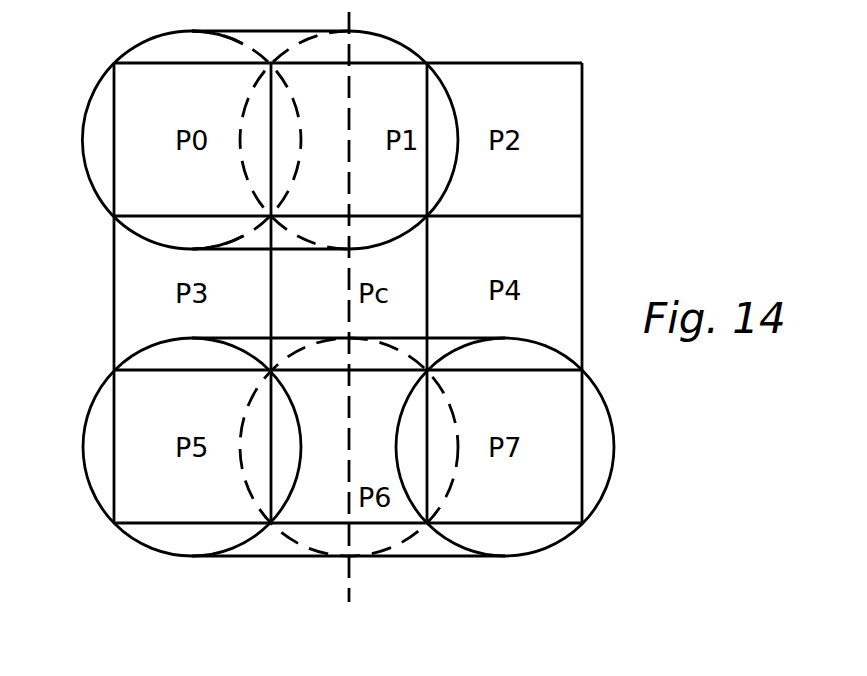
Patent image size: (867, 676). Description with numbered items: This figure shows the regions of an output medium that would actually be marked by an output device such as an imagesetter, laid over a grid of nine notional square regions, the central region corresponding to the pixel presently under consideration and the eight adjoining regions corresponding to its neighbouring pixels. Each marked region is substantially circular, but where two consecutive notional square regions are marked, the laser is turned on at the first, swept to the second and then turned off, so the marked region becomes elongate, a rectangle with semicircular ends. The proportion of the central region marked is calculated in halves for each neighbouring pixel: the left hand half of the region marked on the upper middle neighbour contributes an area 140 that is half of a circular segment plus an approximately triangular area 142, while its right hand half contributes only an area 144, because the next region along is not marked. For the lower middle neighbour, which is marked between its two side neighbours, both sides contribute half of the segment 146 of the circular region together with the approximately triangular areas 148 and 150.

The area 140 is at (313, 225).
The approximately triangular area 142 is at (283, 238).
The area 144 is at (383, 232).
The segment 146 is at (360, 357).
The approximately triangular area 148 is at (407, 347).
The approximately triangular area 150 is at (270, 352).